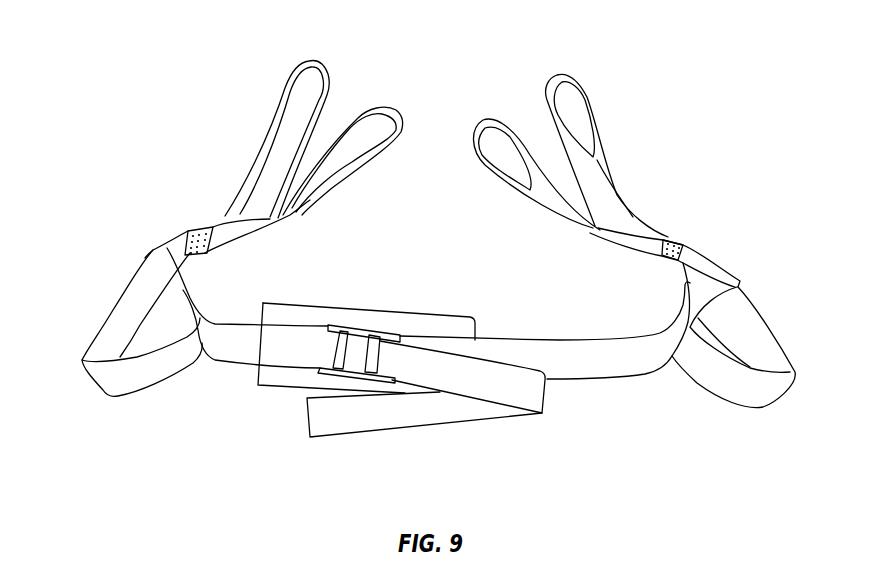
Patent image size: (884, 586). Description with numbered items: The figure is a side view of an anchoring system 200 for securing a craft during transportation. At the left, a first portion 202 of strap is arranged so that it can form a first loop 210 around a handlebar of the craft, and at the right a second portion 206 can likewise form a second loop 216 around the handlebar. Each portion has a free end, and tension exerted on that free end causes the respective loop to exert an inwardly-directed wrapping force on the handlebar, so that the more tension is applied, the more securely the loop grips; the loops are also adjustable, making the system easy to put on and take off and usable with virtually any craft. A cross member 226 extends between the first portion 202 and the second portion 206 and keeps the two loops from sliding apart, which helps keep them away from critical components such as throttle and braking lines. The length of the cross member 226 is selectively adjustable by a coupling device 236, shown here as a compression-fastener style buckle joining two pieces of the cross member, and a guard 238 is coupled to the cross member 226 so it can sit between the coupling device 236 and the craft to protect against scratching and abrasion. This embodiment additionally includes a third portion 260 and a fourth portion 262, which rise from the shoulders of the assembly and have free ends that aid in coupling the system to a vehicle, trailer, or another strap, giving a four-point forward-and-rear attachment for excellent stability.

The anchoring system 200 is at (128, 46).
The first portion 202 is at (260, 175).
The second portion 206 is at (605, 181).
The first loop 210 is at (98, 312).
The second loop 216 is at (778, 315).
The cross member 226 is at (540, 340).
The coupling device 236 is at (357, 340).
The guard 238 is at (430, 312).
The third portion 260 is at (308, 198).
The fourth portion 262 is at (556, 203).